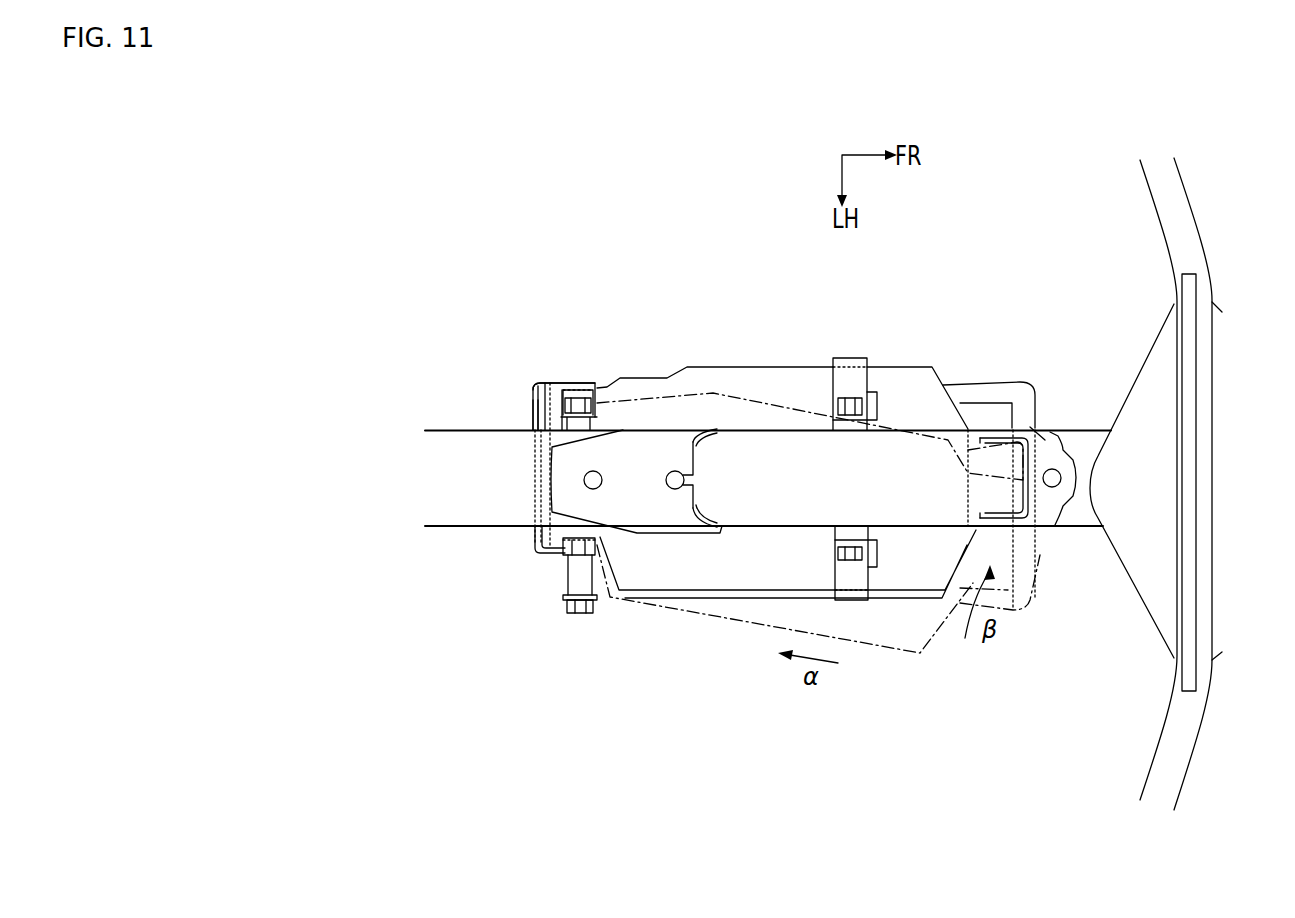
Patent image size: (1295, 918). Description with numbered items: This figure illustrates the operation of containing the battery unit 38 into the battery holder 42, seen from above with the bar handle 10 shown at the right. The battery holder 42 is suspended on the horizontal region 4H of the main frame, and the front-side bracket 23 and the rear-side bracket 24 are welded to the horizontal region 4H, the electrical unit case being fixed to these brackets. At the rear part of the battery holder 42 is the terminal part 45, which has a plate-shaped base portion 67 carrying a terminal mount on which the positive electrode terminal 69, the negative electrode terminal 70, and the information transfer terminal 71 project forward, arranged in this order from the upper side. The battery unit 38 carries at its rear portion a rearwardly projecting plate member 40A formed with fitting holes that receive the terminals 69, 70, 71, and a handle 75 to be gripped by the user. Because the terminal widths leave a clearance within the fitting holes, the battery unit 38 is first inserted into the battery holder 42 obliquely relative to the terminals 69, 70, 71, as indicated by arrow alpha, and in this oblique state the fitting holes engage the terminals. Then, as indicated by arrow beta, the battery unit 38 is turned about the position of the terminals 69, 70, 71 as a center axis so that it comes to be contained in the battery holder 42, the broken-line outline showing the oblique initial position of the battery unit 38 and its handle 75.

The bar handle 10 is at (1210, 441).
The front-side bracket 23 is at (1050, 447).
The rear-side bracket 24 is at (650, 456).
The battery unit 38 is at (742, 367).
The plate member 40A is at (532, 387).
The battery holder 42 is at (848, 352).
The terminal part 45 is at (532, 398).
The horizontal region 4H is at (762, 513).
The plate-shaped base portion 67 is at (533, 415).
The positive electrode terminal 69 is at (597, 449).
The negative electrode terminal 70 is at (579, 495).
The information transfer terminal 71 is at (579, 575).
The handle 75 is at (1022, 398).